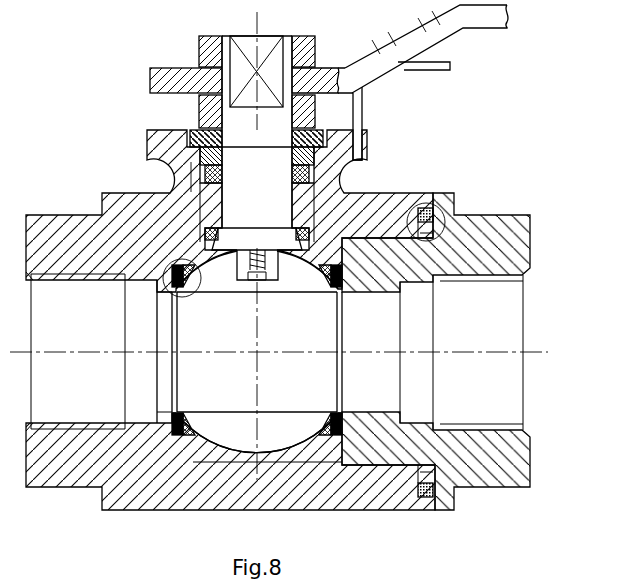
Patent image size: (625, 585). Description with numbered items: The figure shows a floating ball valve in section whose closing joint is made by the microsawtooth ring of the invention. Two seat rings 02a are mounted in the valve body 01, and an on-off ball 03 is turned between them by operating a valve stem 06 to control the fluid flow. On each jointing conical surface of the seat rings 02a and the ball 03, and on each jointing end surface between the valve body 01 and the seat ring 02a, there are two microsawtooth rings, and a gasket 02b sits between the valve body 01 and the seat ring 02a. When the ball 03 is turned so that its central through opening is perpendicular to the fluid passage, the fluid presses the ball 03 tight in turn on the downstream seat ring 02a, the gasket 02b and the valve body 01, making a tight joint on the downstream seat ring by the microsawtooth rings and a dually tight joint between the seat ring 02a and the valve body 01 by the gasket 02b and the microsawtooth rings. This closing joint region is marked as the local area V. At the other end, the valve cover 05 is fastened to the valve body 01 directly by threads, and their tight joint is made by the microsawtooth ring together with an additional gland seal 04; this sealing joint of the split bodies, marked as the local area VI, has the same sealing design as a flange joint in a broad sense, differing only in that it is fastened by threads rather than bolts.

The valve body 01 is at (118, 511).
The seat ring 02a is at (187, 440).
The gasket 02b is at (173, 440).
The on-off ball 03 is at (250, 452).
The gland seal 04 is at (427, 497).
The valve cover 05 is at (477, 487).
The valve stem 06 is at (258, 26).
The local area V is at (173, 258).
The local area VI is at (423, 206).